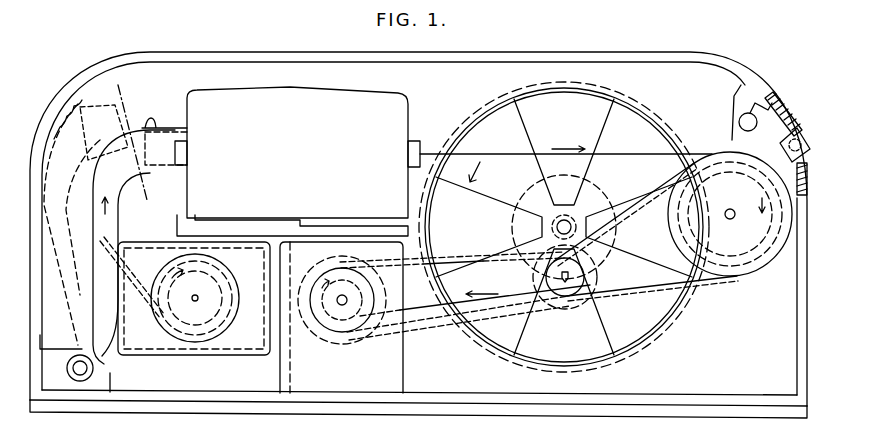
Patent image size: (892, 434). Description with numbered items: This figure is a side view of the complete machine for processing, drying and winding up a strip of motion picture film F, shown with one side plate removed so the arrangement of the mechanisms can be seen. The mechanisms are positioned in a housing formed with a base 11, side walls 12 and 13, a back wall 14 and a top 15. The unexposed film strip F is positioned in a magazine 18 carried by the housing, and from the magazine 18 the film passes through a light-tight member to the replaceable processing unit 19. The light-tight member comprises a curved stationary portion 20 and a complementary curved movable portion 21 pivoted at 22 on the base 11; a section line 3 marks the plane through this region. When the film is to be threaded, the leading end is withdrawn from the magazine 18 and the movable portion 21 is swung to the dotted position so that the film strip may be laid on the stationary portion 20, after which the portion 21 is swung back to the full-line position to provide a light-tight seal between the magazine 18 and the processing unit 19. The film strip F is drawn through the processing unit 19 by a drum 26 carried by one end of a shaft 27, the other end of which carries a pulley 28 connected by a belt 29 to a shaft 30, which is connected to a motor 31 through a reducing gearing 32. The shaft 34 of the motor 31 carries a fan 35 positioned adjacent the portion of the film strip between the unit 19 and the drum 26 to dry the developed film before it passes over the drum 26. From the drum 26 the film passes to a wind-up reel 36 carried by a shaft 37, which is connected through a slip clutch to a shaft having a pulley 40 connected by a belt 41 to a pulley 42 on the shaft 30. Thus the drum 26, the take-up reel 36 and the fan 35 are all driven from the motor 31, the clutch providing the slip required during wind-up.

The section line 3- 3 is at (125, 84).
The base 11 is at (205, 412).
The side wall 12 is at (40, 335).
The side wall 13 is at (803, 347).
The back wall 14 is at (426, 248).
The top 15 is at (305, 52).
The magazine 18 is at (194, 298).
The processing unit 19 is at (281, 161).
The curved stationary portion 20 is at (118, 224).
The curved movable portion 21 is at (92, 205).
The pivot 22 is at (87, 365).
The drum 26 is at (742, 277).
The shaft 27 is at (731, 219).
The pulley 28 is at (418, 417).
The belt 29 is at (660, 200).
The shaft 30 is at (563, 285).
The motor 31 is at (573, 183).
The reducing gearing 32 is at (530, 243).
The motor shaft 34 is at (583, 217).
The fan 35 is at (564, 227).
The wind-up reel 36 is at (356, 340).
The shaft 37 is at (342, 305).
The pulley 40 is at (317, 324).
The belt 41 is at (466, 261).
The pulley 42 is at (542, 274).
The film strip F is at (431, 150).